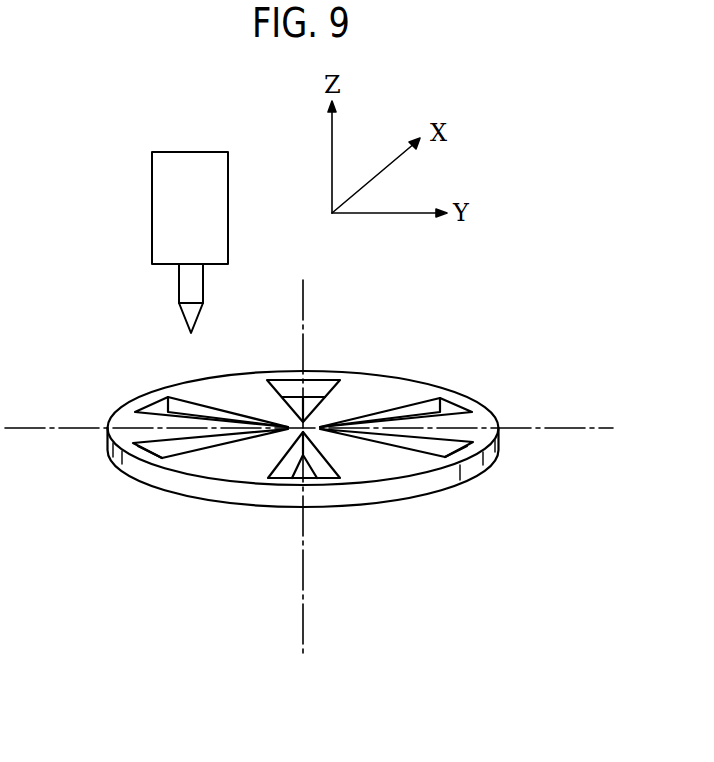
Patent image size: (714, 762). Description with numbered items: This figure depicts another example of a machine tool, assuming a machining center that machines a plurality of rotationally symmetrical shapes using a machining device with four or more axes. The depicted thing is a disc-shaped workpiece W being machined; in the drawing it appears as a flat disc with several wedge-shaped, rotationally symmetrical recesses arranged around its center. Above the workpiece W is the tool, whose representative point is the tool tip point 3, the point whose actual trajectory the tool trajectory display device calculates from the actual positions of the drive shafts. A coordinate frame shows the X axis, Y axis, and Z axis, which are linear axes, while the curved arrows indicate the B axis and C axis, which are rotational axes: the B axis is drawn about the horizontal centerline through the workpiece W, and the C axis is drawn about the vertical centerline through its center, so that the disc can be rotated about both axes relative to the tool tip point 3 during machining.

The tool tip point 3 is at (190, 333).
The disc-shaped workpiece W is at (418, 485).
The B axis B is at (610, 403).
The C axis C is at (275, 600).